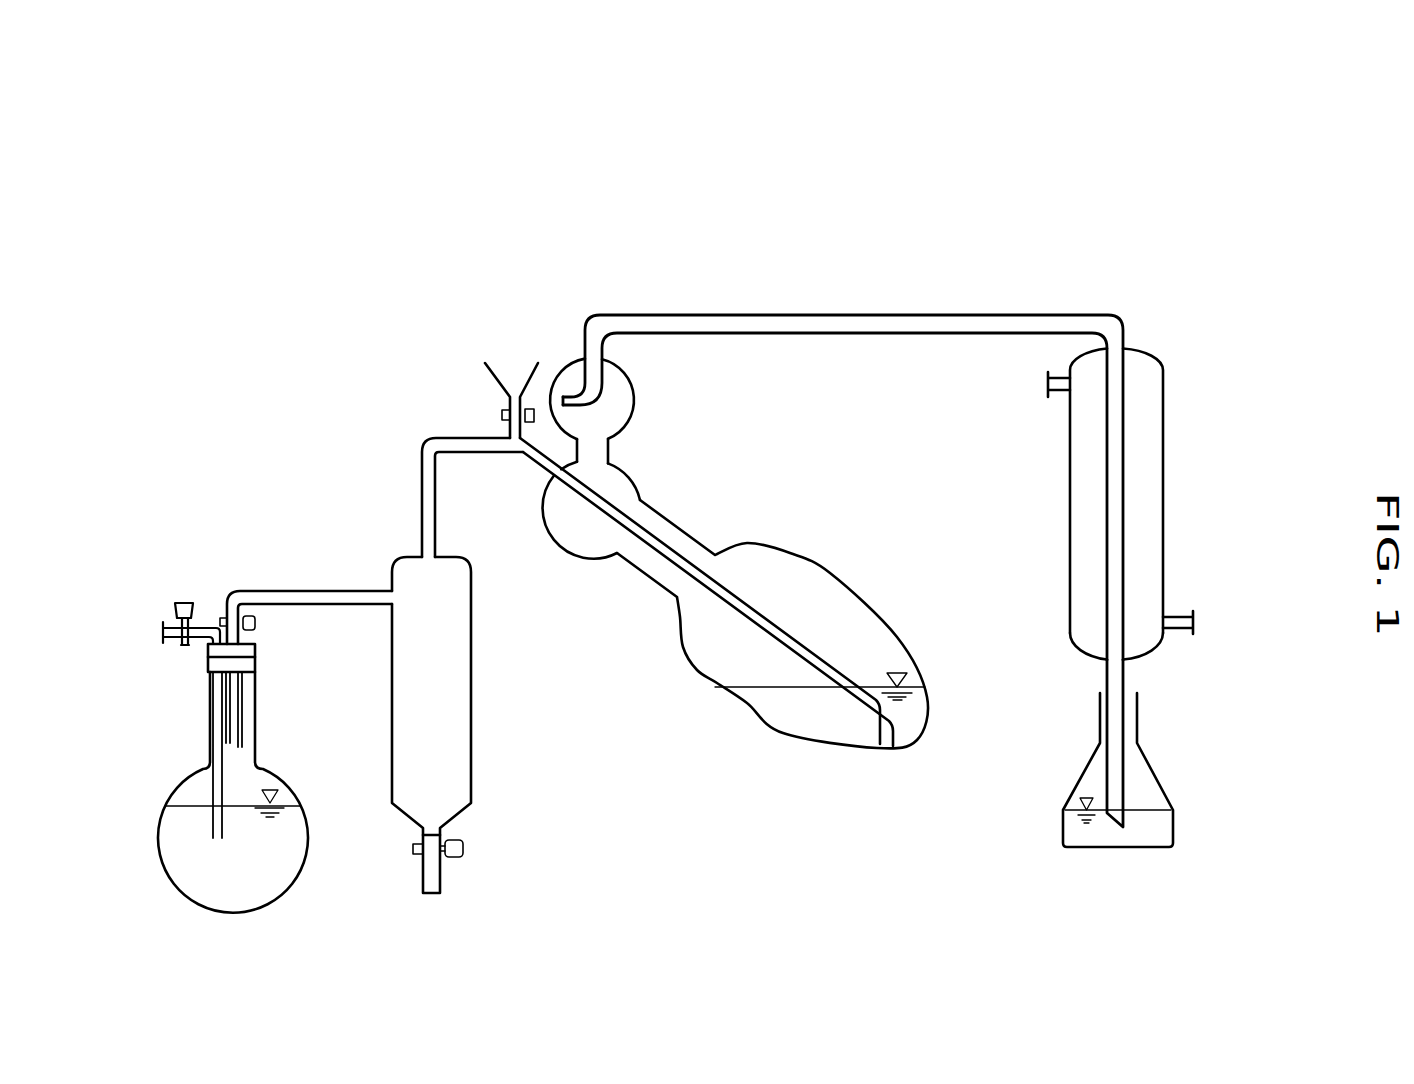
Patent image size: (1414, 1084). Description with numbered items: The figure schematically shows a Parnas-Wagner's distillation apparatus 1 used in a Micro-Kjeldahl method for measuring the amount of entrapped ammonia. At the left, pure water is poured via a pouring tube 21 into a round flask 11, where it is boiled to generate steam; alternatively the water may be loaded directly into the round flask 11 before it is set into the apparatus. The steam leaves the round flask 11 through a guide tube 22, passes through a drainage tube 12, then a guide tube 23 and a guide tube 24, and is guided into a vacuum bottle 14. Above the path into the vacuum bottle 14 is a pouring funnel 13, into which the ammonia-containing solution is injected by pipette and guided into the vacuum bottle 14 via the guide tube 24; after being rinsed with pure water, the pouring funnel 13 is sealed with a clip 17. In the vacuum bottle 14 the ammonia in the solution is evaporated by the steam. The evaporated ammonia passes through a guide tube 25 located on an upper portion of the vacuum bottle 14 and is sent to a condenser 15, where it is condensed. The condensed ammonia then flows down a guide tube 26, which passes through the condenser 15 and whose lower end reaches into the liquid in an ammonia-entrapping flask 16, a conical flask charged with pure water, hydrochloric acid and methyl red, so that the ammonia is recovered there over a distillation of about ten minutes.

The Parnas-Wagner's distillation apparatus 1 is at (1102, 250).
The round flask 11 is at (177, 783).
The drainage tube 12 is at (473, 749).
The pouring funnel 13 is at (490, 373).
The vacuum bottle 14 is at (853, 593).
The condenser 15 is at (1165, 507).
The ammonia-entrapping flask 16 is at (1162, 785).
The clip 17 is at (531, 403).
The pouring tube 21 is at (215, 626).
The guide tube 22 is at (302, 590).
The guide tube 23 is at (435, 493).
The guide tube 24 is at (668, 546).
The guide tube 25 is at (902, 315).
The guide tube 26 is at (1125, 675).